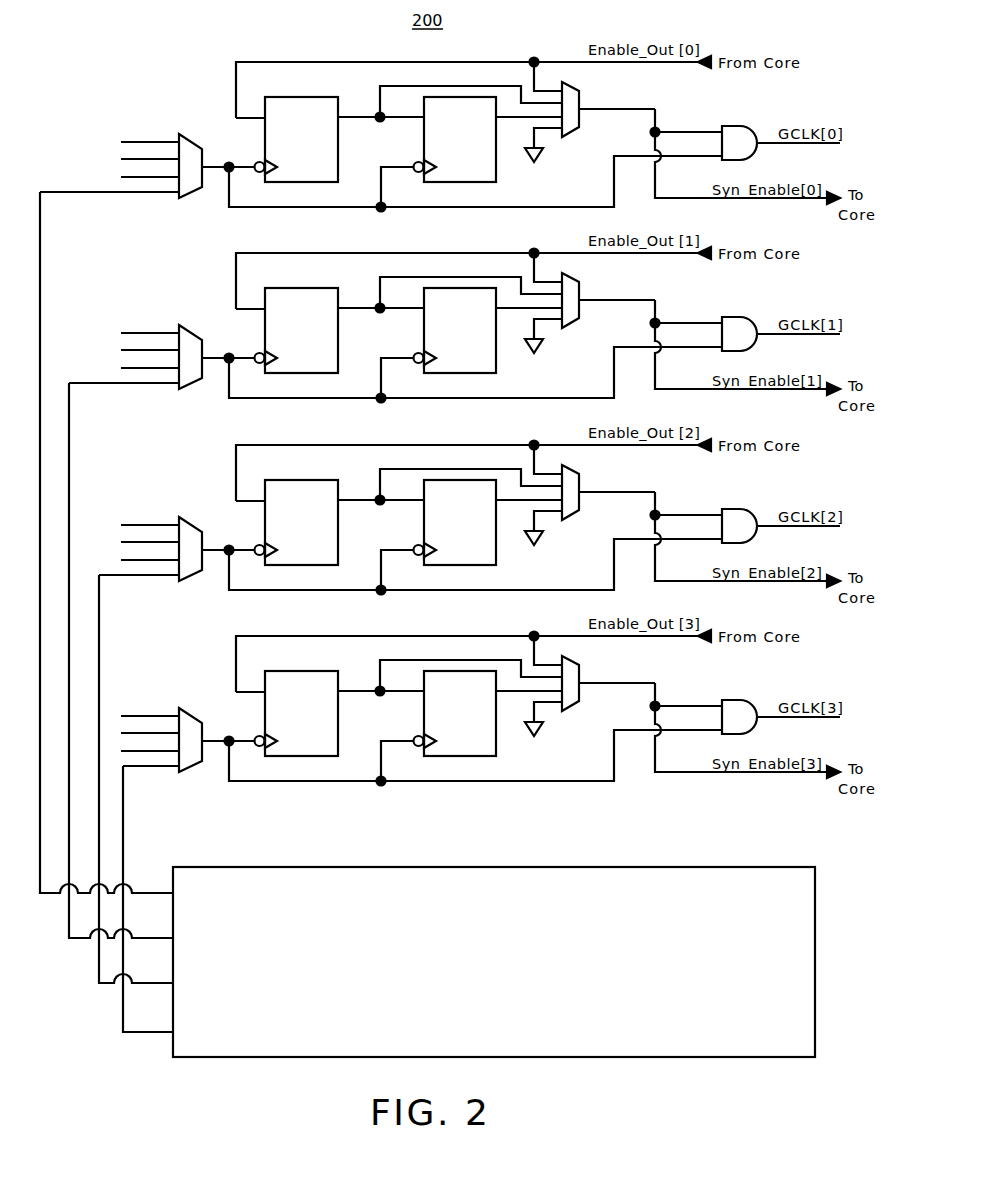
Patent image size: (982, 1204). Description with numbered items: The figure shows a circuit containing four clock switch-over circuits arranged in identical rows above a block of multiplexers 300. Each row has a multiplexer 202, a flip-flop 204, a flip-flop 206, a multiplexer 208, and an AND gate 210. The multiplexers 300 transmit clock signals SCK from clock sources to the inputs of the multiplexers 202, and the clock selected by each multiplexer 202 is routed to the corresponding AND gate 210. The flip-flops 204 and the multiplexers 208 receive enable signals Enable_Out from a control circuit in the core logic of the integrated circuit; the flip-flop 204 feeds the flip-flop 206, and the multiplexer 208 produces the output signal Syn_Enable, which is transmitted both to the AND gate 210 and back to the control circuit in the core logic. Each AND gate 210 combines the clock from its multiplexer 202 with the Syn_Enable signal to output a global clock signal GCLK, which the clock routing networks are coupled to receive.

The multiplexer 202 is at (192, 134).
The flip-flop 204 is at (309, 97).
The flip-flop 206 is at (498, 161).
The multiplexer 208 is at (577, 93).
The AND gate 210 is at (730, 126).
The multiplexers 300 is at (490, 867).